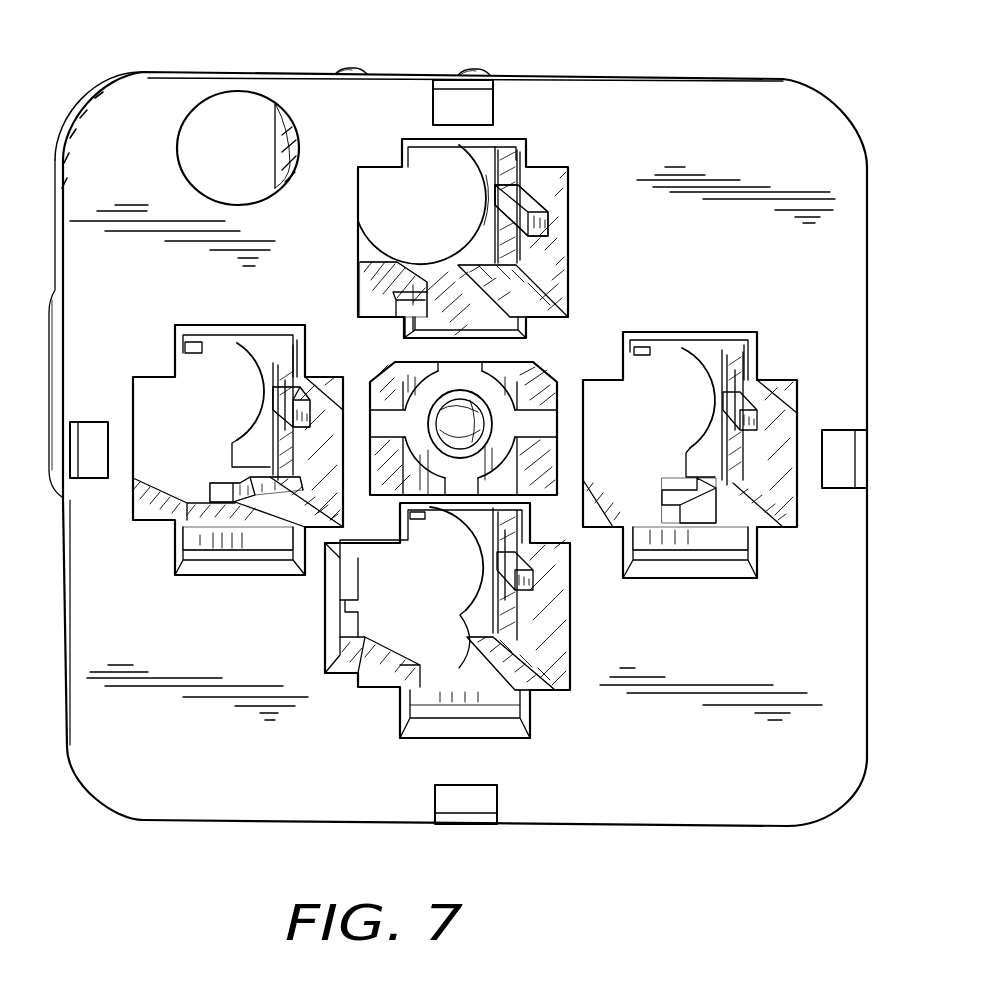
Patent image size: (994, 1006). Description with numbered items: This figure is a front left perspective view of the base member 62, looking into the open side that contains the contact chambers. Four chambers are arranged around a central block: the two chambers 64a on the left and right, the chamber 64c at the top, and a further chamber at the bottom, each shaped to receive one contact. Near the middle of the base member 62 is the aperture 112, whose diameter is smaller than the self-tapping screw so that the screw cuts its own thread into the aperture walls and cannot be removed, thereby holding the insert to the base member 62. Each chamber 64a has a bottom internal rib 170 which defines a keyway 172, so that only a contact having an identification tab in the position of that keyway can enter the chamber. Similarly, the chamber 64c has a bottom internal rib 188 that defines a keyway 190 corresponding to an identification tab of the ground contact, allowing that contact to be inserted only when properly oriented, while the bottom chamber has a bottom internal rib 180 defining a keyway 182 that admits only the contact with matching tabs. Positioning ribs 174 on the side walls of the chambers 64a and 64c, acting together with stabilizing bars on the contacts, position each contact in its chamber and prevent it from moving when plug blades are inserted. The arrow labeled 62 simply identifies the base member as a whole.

The chamber 64c is at (431, 168).
The chamber 64a is at (192, 430).
The positioning rib 174 is at (540, 226).
The keyway 190 is at (475, 323).
The bottom internal rib 188 is at (395, 272).
The keyway 172 is at (203, 523).
The bottom internal rib 170 is at (255, 517).
The bottom internal rib 180 is at (413, 678).
The keyway 182 is at (455, 687).
The aperture 112 is at (487, 407).
The base member 62 is at (726, 883).